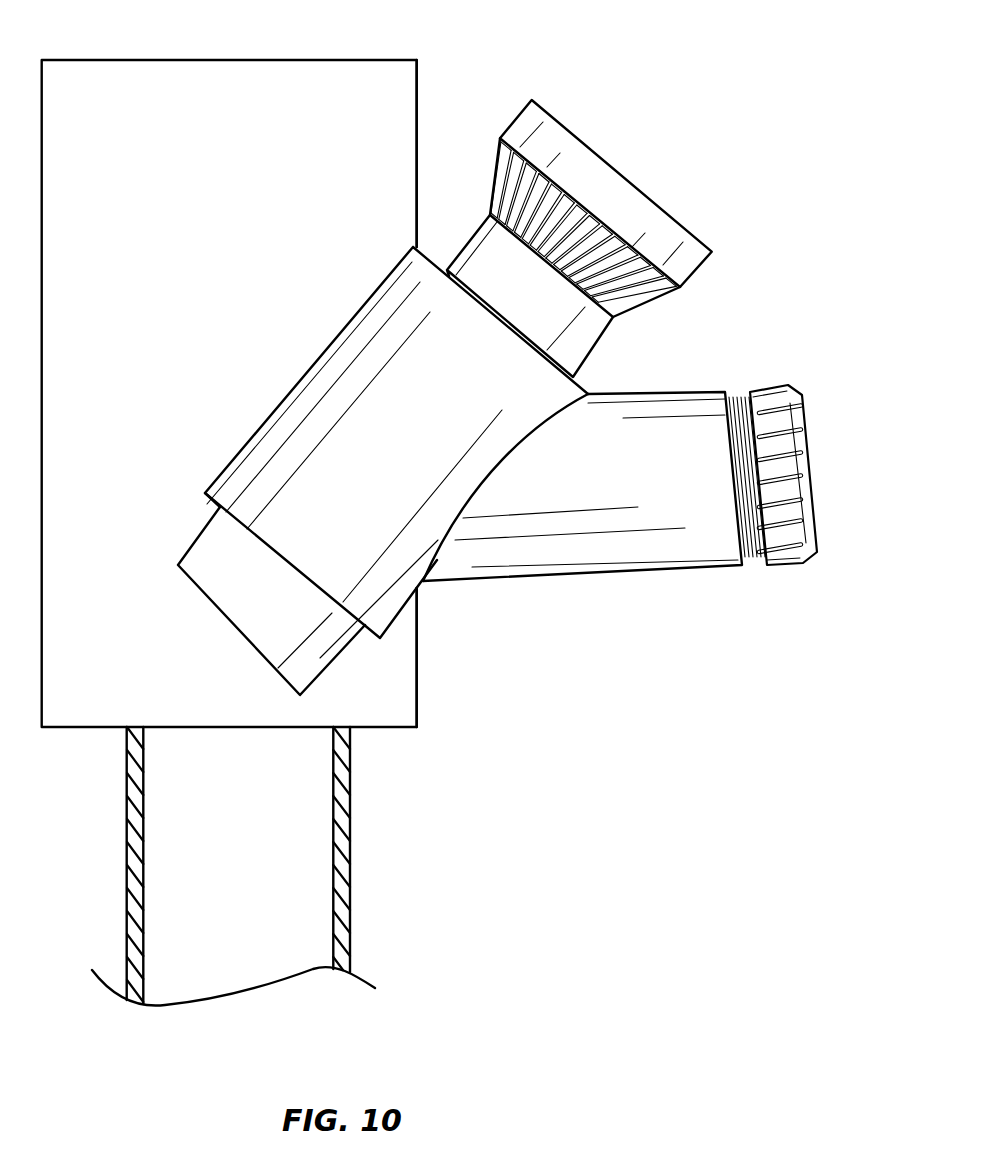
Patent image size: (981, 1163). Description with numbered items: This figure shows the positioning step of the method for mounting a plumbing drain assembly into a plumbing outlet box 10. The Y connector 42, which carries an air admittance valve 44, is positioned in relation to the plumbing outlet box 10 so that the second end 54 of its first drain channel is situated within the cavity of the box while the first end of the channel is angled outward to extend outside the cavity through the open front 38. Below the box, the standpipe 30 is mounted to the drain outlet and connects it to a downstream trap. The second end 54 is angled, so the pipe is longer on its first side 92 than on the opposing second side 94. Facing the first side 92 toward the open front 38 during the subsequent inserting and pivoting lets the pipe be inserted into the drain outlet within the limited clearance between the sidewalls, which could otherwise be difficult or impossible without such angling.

The plumbing outlet box 10 is at (163, 60).
The standpipe 30 is at (127, 798).
The open front 38 is at (420, 100).
The Y connector 42 is at (308, 367).
The air admittance valve 44 is at (605, 160).
The second end 54 is at (217, 612).
The first side 92 is at (327, 668).
The second side 94 is at (198, 532).